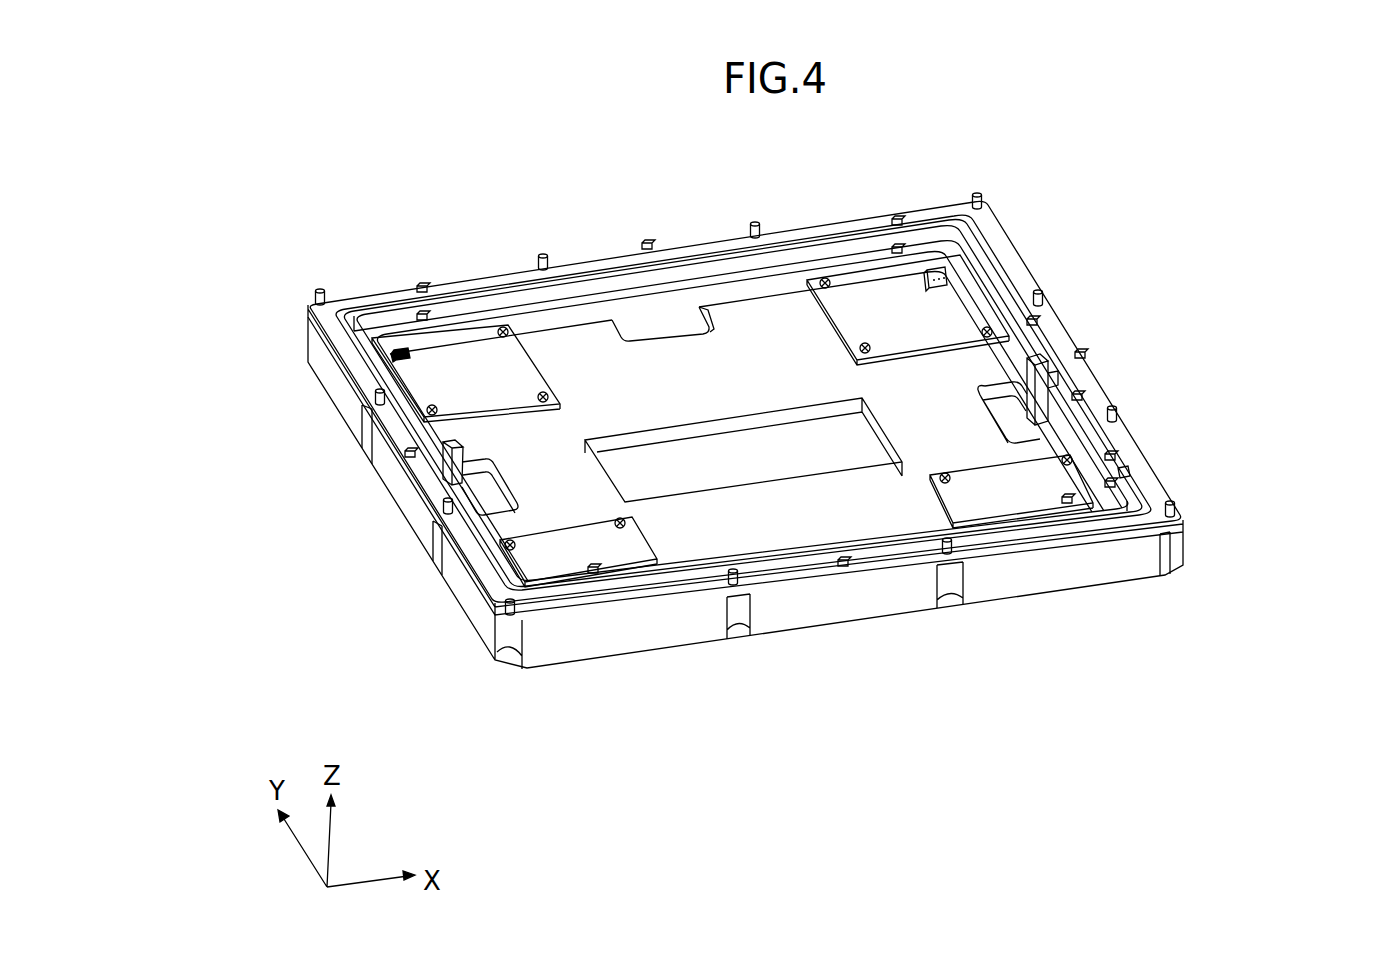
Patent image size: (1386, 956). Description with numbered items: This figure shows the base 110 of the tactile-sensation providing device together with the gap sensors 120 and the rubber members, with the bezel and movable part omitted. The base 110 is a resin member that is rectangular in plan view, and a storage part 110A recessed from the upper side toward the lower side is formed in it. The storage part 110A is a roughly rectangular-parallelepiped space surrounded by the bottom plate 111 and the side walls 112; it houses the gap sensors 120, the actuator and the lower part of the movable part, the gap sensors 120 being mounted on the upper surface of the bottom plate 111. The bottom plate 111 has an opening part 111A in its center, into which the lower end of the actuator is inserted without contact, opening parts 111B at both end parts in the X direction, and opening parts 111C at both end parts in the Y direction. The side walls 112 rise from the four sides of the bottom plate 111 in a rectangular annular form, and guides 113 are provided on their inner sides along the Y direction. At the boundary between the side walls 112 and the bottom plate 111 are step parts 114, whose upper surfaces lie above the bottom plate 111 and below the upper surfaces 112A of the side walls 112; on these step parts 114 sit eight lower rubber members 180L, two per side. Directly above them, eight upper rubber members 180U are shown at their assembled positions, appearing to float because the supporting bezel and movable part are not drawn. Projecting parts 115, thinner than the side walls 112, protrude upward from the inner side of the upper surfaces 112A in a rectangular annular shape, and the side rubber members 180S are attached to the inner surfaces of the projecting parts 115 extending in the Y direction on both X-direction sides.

The base 110 is at (1013, 240).
The storage part 110A is at (782, 357).
The bottom plate 111 is at (793, 515).
The opening part 111A is at (683, 458).
The opening parts 111B is at (1013, 415).
The opening parts 111C is at (667, 333).
The side walls 112 is at (453, 607).
The upper surfaces of the side walls 112A is at (433, 485).
The guides 113 is at (1043, 383).
The step parts 114 is at (1025, 342).
The projecting parts 115 is at (1017, 279).
The gap sensors 120 is at (1000, 497).
The rubber members 180U is at (418, 290).
The rubber members 180L is at (425, 320).
The rubber members 180S is at (1133, 477).